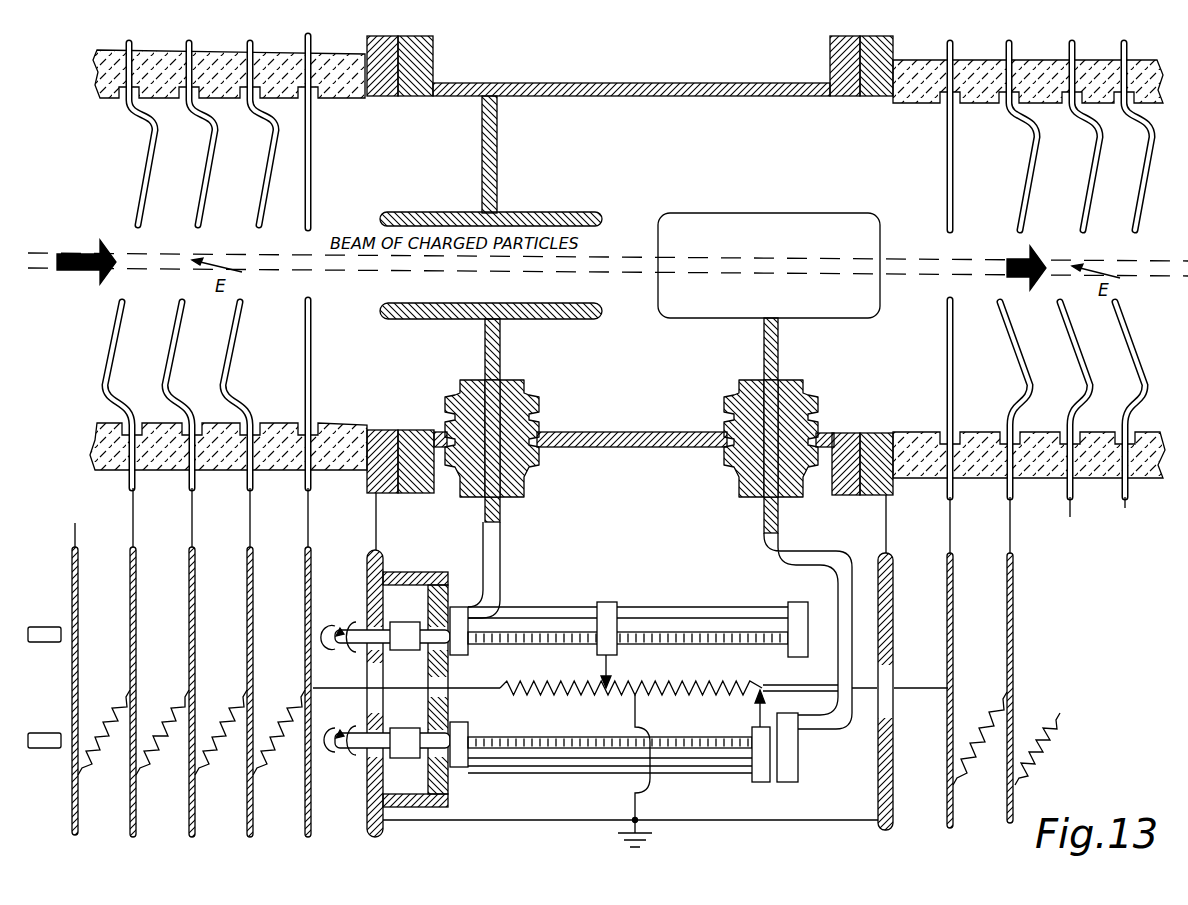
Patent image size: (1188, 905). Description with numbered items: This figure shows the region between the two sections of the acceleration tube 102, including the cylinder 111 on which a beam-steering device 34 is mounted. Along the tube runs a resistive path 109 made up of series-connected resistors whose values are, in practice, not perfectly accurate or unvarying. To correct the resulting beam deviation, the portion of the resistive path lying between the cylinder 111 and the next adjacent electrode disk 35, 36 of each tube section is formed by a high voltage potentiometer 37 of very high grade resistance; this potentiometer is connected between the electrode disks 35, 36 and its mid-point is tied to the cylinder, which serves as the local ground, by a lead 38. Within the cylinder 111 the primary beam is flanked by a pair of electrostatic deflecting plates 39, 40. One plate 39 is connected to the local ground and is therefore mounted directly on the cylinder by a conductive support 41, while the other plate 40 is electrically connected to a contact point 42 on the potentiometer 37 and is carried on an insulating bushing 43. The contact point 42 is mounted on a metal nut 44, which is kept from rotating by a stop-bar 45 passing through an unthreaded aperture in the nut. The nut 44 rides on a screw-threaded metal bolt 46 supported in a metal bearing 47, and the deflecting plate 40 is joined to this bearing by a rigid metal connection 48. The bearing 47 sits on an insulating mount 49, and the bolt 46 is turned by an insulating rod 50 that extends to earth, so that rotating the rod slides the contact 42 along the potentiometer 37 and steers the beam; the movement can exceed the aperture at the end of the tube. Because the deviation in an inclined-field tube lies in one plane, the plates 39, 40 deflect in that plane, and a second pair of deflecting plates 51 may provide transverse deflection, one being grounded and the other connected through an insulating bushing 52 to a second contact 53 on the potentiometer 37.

The acceleration tube 102 is at (217, 53).
The cylinder 111 is at (651, 70).
The conductive support 41 is at (482, 148).
The electrostatic deflecting plate 39 is at (569, 212).
The electrostatic deflecting plate 40 is at (581, 319).
The second pair of deflecting plates 51 is at (745, 213).
The insulating bushing 43 is at (536, 422).
The insulating bushing 52 is at (808, 407).
The rigid metal connection 48 is at (483, 572).
The beam-steering device 34 is at (507, 563).
The insulating mount 49 is at (432, 572).
The insulating rod 50 is at (355, 620).
The metal bearing 47 is at (465, 655).
The stop-bar 45 is at (718, 608).
The metal nut 44 is at (607, 602).
The screw-threaded metal bolt 46 is at (572, 644).
The contact point 42 is at (612, 683).
The high voltage potentiometer 37 is at (700, 685).
The lead 38 is at (635, 713).
The second contact 53 is at (755, 707).
The electrode disk 35 is at (315, 832).
The electrode disk 36 is at (950, 828).
The resistive path 109 is at (225, 745).